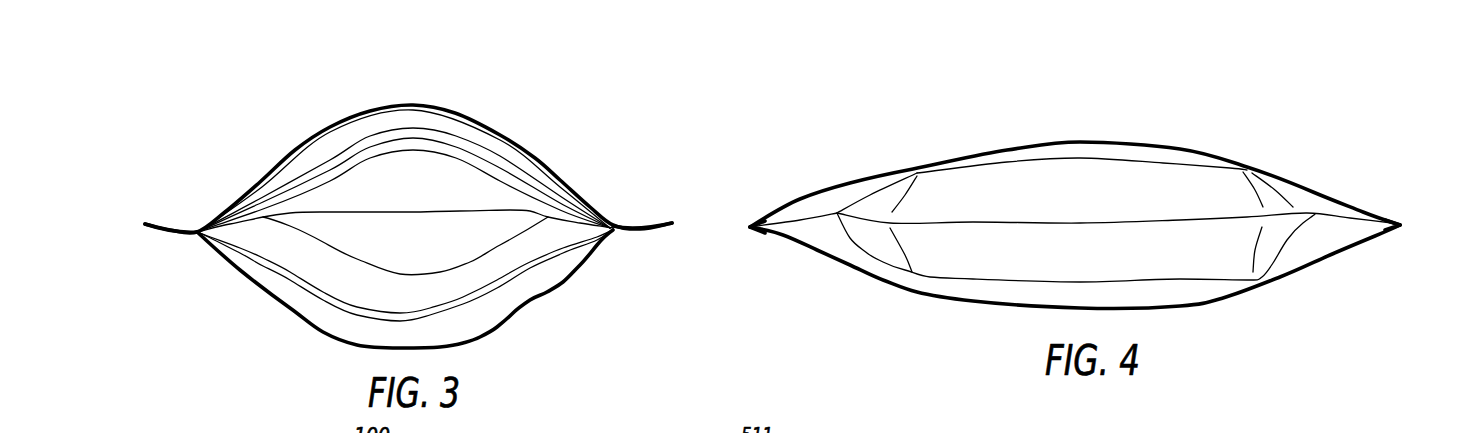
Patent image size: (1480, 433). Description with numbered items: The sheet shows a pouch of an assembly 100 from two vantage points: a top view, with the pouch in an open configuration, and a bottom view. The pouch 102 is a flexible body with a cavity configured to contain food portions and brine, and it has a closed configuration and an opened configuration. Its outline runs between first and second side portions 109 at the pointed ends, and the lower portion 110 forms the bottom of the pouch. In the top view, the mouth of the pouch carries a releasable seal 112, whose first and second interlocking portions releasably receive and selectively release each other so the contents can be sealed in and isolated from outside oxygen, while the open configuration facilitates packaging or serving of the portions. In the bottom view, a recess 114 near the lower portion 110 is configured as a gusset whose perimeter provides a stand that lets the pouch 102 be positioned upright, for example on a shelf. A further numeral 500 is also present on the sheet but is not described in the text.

In FIG. 3, the assembly 100 is at (487, 80).
In FIG. 4, the assembly 100 is at (1218, 100).
In FIG. 3, the pouch 102 is at (366, 103).
In FIG. 4, the pouch 102 is at (1032, 140).
In FIG. 3, the first and second side portions 109 is at (140, 225).
In FIG. 4, the first and second side portions 109 is at (744, 230).
In FIG. 3, the lower portion 110 is at (245, 282).
In FIG. 4, the lower portion 110 is at (972, 307).
In FIG. 3, the releasable seal 112 is at (511, 158).
In FIG. 4, the recess 114 is at (1215, 188).
In FIG. 4, the packaging system 500 is at (1330, 430).